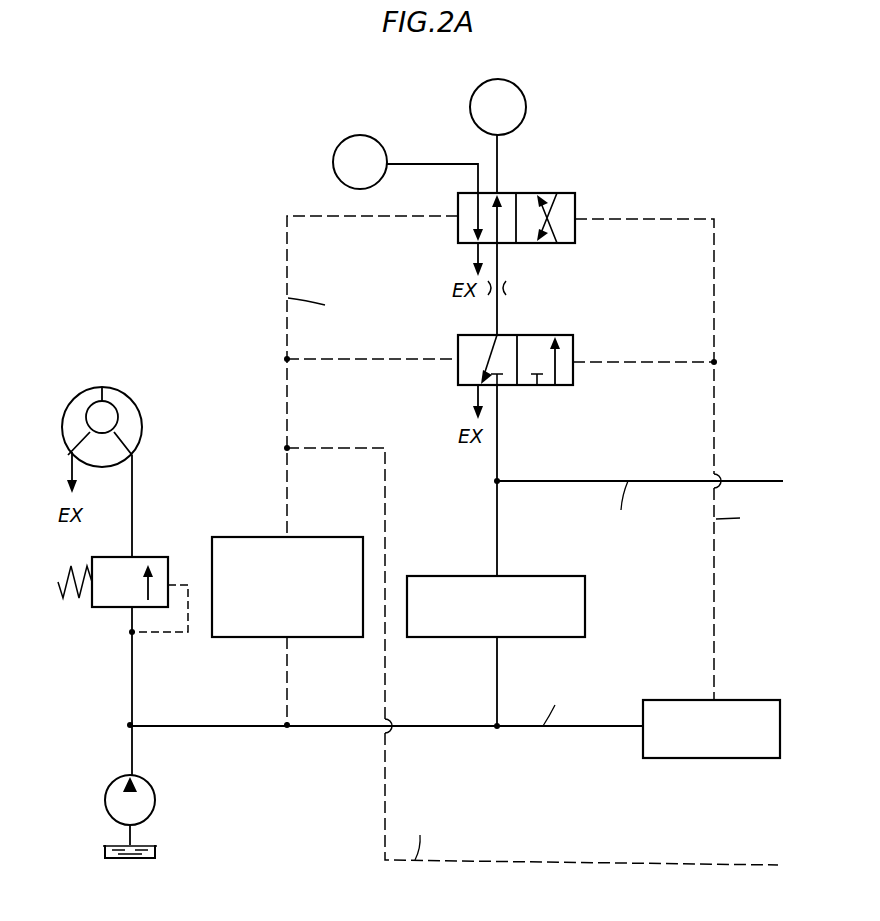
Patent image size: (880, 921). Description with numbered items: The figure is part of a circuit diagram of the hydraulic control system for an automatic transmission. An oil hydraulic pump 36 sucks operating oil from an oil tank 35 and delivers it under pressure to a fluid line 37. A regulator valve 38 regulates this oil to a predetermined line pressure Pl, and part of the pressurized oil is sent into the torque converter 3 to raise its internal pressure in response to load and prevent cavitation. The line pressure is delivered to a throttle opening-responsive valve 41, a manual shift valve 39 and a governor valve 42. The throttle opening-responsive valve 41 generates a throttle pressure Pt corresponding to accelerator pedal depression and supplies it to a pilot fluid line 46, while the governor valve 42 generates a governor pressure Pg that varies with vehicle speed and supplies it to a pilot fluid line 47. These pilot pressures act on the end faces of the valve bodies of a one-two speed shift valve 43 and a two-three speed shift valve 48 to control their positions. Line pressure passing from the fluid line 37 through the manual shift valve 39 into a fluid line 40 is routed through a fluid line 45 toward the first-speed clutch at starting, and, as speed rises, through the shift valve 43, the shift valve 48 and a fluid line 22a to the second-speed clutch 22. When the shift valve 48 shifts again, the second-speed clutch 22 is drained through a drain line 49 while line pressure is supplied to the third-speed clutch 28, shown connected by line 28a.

The torque converter 3 is at (139, 411).
The second-speed clutch 22 is at (524, 97).
The fluid line 22a is at (501, 161).
The third-speed clutch 28 is at (380, 140).
The oil passage to third clutch 28a is at (438, 164).
The oil tank 35 is at (156, 850).
The oil hydraulic pump 36 is at (156, 800).
The fluid line 37 is at (407, 726).
The regulator valve 38 is at (152, 557).
The manual shift valve 39 is at (570, 576).
The fluid line 40 is at (497, 528).
The throttle opening-responsive valve 41 is at (303, 537).
The governor valve 42 is at (724, 700).
The 1-2 speed shift valve 43 is at (573, 350).
The fluid line 45 is at (733, 481).
The pilot fluid line 46 is at (288, 416).
The pilot fluid line 47 is at (716, 311).
The 2-3 speed shift valve 48 is at (575, 202).
The drain line 49 is at (476, 258).